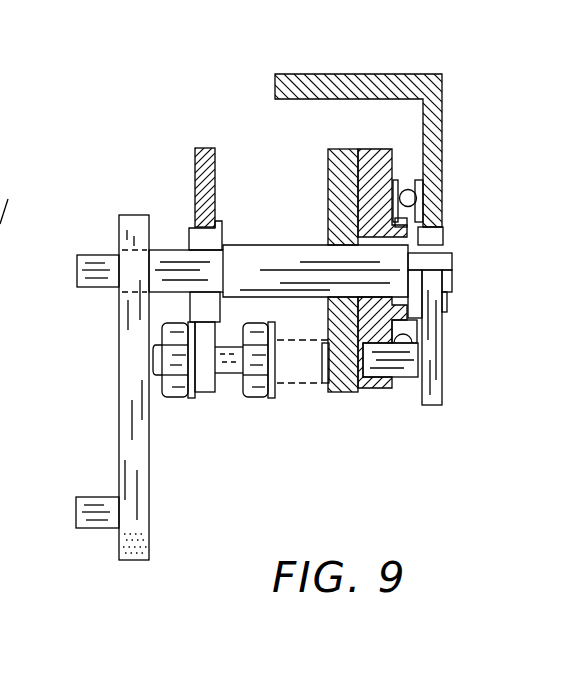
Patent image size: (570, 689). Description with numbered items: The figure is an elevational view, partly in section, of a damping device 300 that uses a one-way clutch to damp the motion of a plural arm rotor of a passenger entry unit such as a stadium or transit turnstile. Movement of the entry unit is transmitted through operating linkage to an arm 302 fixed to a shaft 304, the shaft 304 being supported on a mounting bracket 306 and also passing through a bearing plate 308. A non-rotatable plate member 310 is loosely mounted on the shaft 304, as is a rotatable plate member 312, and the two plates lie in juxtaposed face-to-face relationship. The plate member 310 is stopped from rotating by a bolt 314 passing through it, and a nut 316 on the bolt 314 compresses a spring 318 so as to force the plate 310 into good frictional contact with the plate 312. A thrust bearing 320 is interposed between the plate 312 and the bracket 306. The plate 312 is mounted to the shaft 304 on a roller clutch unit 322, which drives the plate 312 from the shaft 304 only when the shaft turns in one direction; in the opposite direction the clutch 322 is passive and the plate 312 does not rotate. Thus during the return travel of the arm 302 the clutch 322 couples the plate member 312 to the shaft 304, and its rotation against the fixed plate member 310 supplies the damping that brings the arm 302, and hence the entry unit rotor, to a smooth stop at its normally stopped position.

The damping device 300 is at (403, 60).
The arm 302 is at (148, 470).
The shaft 304 is at (103, 288).
The mounting bracket 306 is at (443, 110).
The bearing plate 308 is at (202, 148).
The non-rotatable plate member 310 is at (330, 188).
The rotatable plate member 312 is at (385, 170).
The bolt 314 is at (403, 367).
The nut 316 is at (258, 400).
The spring 318 is at (278, 385).
The thrust bearing 320 is at (397, 219).
The roller clutch unit 322 is at (400, 240).